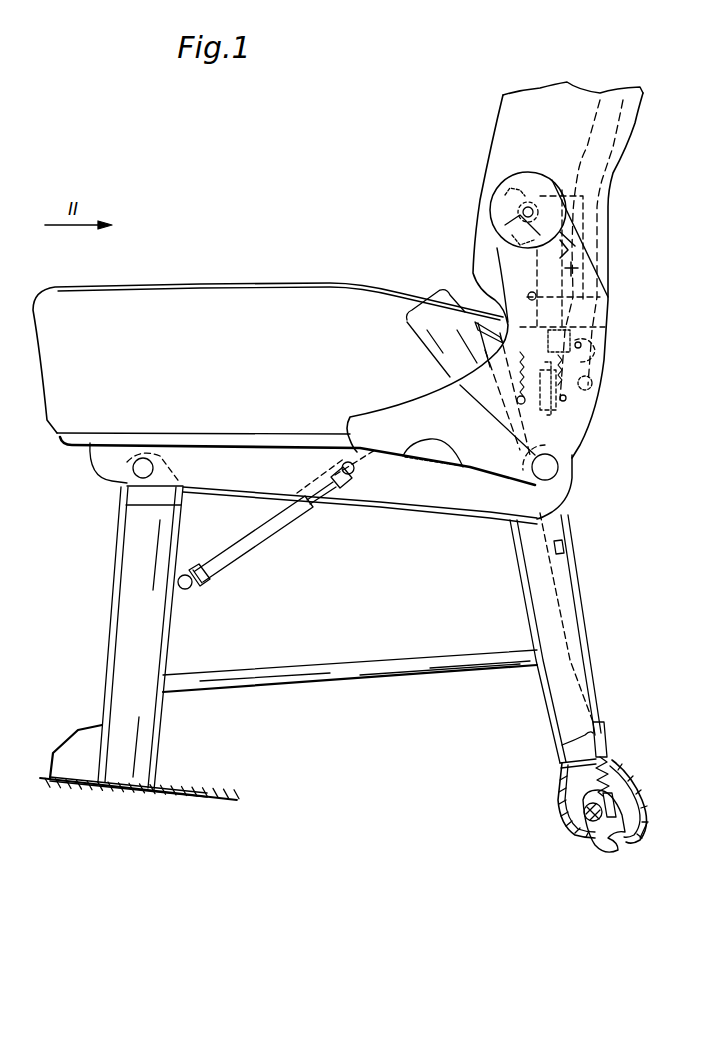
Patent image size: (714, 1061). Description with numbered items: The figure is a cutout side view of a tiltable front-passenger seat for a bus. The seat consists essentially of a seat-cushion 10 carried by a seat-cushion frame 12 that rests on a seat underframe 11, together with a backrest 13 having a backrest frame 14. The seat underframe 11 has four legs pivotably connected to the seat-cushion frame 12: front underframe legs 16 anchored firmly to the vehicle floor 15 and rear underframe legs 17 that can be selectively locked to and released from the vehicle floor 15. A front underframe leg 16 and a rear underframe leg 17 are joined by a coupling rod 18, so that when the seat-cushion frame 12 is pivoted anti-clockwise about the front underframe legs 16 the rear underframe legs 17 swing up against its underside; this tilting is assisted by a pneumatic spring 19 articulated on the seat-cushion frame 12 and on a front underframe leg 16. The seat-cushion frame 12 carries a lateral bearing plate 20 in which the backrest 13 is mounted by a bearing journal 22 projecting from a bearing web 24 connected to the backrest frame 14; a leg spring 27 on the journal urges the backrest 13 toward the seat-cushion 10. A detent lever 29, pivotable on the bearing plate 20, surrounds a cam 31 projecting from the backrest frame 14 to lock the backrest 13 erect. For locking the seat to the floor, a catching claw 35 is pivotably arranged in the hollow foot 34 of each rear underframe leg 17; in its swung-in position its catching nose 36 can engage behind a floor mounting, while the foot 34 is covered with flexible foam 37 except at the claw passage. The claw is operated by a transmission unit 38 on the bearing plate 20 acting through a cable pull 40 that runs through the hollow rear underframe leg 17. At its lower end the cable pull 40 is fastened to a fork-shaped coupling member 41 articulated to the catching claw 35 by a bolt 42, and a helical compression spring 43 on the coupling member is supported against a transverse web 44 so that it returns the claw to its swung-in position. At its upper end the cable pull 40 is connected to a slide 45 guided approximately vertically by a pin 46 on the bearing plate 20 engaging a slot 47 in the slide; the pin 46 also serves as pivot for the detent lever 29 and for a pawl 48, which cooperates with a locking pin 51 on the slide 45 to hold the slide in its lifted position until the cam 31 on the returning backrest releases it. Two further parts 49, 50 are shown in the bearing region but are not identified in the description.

The seat-cushion 10 is at (167, 300).
The seat underframe 11 is at (110, 578).
The seat-cushion frame 12 is at (103, 455).
The backrest 13 is at (530, 105).
The backrest frame 14 is at (613, 105).
The vehicle floor 15 is at (218, 808).
The front underframe leg 16 is at (127, 643).
The rear underframe leg 17 is at (557, 700).
The coupling rod 18 is at (257, 680).
The pneumatic spring 19 is at (247, 543).
The bearing plate 20 is at (450, 433).
The bearing journal 22 is at (523, 212).
The bearing web 24 is at (590, 207).
The leg spring 27 is at (517, 180).
The detent lever 29 is at (610, 357).
The cam 31 is at (593, 328).
The hollow foot 34 is at (573, 788).
The catching claw 35 is at (570, 833).
The catching nose 36 is at (597, 853).
The flexible foam 37 is at (645, 840).
The transmission unit 38 is at (593, 270).
The cable pull 40 is at (567, 545).
The coupling member 41 is at (603, 753).
The bolt 42 is at (620, 802).
The helical compression spring 43 is at (610, 767).
The transverse web 44 is at (573, 761).
The slide 45 is at (593, 243).
The pin 46 is at (575, 365).
The slot 47 is at (563, 390).
The pawl 48 is at (530, 287).
The catch 49 is at (500, 187).
The toothed segment 50 is at (517, 243).
The locking pin 51 is at (600, 297).